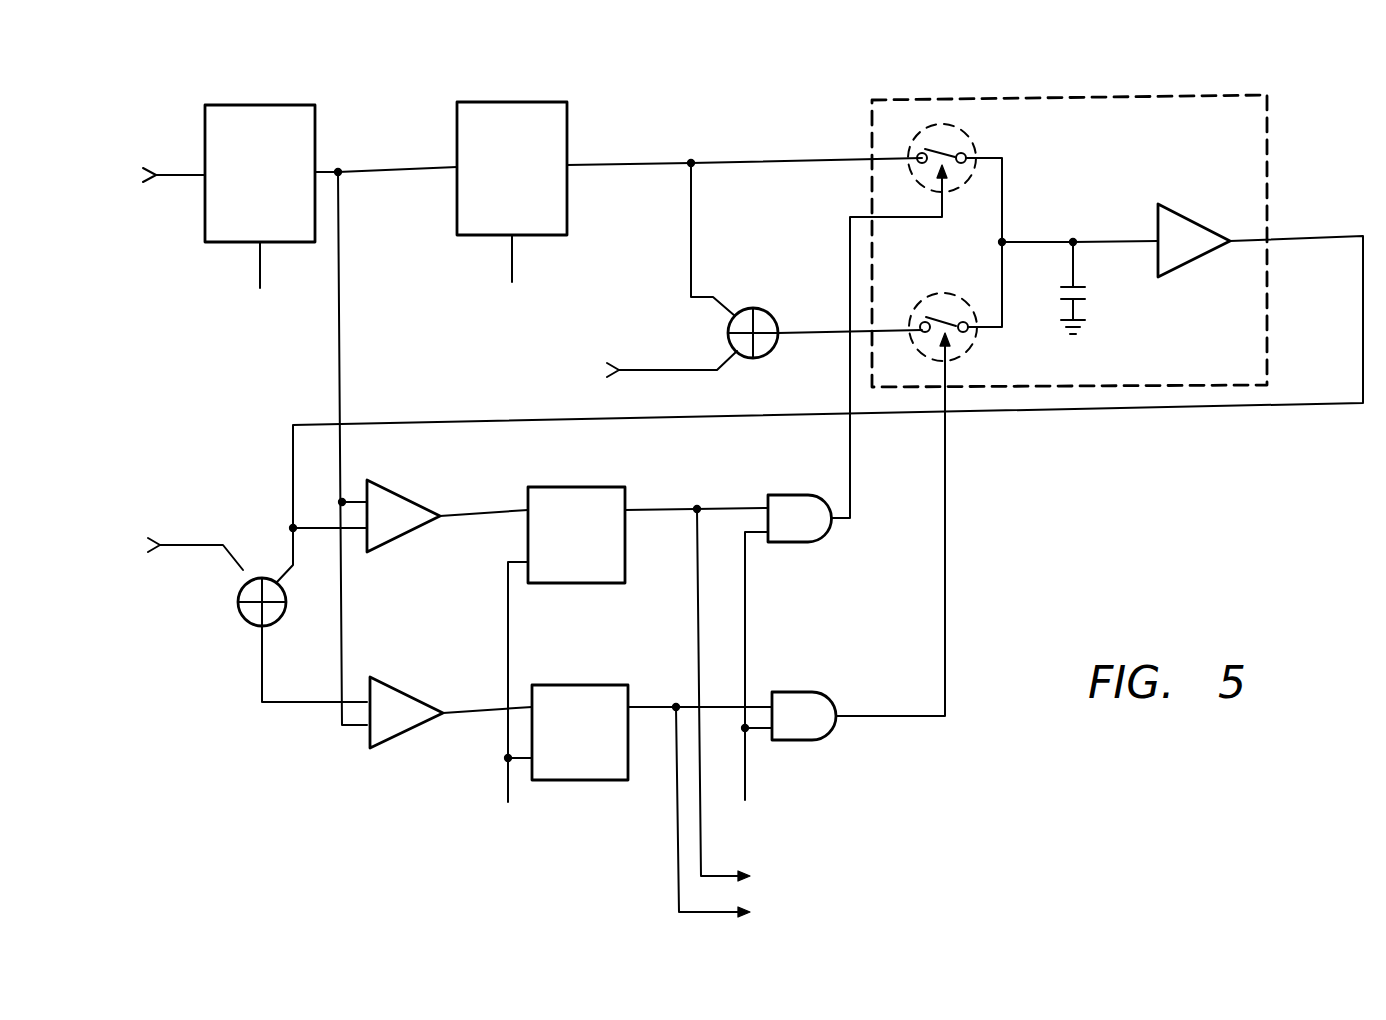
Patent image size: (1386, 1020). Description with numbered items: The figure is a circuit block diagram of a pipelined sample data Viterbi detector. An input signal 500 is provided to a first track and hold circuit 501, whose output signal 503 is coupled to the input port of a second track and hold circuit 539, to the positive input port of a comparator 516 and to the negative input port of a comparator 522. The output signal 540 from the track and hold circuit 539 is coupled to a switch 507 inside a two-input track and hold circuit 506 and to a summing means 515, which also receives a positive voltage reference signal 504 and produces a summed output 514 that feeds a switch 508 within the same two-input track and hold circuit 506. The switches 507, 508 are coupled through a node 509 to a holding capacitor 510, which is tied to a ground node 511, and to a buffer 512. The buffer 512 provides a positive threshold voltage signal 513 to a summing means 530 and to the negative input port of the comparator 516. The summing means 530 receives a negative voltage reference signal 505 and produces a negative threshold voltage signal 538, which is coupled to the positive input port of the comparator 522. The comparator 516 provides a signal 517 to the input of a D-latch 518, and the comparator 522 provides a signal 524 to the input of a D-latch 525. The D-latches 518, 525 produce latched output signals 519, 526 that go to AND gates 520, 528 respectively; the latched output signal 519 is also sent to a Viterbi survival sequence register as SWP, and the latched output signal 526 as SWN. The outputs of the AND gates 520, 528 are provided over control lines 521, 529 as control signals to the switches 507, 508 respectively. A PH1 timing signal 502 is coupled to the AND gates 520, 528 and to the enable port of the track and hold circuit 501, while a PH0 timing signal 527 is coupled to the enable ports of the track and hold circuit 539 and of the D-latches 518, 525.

The input signal 500 is at (182, 176).
The track and hold circuit 501 is at (205, 142).
The PH1 timing signal 502 is at (260, 262).
The output signal 503 is at (341, 376).
The positive voltage reference signal 504 is at (658, 370).
The negative voltage reference signal 505 is at (190, 545).
The two-input track and hold circuit 506 is at (1267, 146).
The switch 507 is at (976, 152).
The switch 508 is at (976, 340).
The node 509 is at (1000, 242).
The holding capacitor 510 is at (1088, 290).
The ground node 511 is at (1087, 324).
The buffer 512 is at (1200, 260).
The positive threshold voltage signal 513 is at (1152, 408).
The summed output 514 is at (798, 338).
The summing means 515 is at (766, 314).
The comparator 516 is at (405, 534).
The signal 517 is at (490, 512).
The D-latch 518 is at (576, 584).
The latched output signal 519 is at (696, 506).
The AND gate 520 is at (794, 544).
The first switch control line 521 is at (852, 460).
The comparator 522 is at (408, 731).
The signal 524 is at (482, 709).
The D-latch 525 is at (580, 781).
The latched output signal 526 is at (675, 705).
The PH0 timing signal 527 is at (512, 258).
The AND gate 528 is at (800, 742).
The second switch control line 529 is at (880, 716).
The summing means 530 is at (244, 622).
The negative threshold voltage signal 538 is at (305, 704).
The track and hold circuit 539 is at (457, 142).
The output signal 540 is at (691, 160).